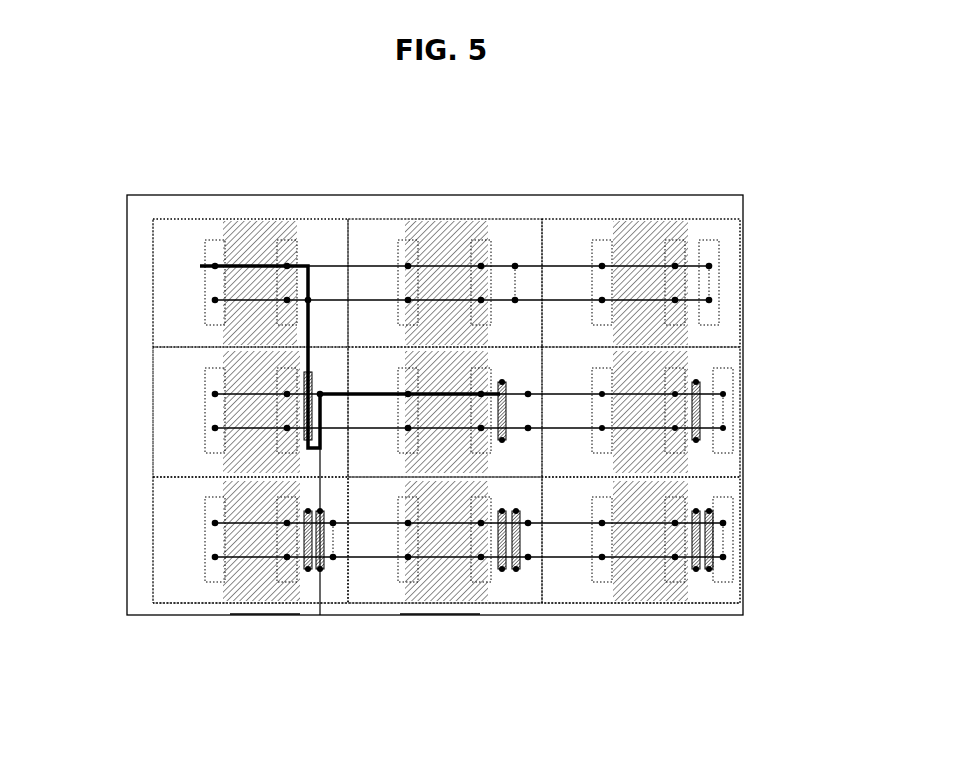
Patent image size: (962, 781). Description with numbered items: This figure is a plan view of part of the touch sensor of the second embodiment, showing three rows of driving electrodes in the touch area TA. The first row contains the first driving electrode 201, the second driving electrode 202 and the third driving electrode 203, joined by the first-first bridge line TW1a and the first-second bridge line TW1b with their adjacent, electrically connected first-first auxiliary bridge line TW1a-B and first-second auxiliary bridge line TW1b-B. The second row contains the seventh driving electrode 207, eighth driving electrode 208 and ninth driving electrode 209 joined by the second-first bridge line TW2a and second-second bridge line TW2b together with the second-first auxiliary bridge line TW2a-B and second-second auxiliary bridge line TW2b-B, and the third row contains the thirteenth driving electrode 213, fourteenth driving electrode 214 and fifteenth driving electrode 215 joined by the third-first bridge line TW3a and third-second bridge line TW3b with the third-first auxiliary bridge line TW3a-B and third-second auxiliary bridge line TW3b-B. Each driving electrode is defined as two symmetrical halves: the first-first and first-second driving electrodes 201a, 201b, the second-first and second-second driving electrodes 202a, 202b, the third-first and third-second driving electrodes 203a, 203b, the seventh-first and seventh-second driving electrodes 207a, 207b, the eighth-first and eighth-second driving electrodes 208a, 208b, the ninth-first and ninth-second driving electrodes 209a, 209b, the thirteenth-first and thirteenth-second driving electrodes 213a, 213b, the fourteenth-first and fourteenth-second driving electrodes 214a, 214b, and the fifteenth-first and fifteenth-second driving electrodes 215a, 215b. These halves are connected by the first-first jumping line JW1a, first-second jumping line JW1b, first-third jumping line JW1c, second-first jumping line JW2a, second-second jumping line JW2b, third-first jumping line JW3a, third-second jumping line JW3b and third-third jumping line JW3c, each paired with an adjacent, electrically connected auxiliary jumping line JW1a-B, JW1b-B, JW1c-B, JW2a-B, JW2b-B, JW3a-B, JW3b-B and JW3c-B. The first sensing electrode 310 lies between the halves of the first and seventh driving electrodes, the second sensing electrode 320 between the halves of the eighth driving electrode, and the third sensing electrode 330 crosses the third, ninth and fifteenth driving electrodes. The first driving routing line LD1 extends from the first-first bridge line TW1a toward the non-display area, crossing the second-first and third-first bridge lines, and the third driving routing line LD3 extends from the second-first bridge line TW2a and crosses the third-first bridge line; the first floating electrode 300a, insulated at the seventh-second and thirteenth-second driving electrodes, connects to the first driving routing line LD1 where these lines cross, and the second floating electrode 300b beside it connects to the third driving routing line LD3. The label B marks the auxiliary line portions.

The first driving electrode 201 is at (293, 180).
The first-first driving electrode 201a is at (160, 216).
The first-second driving electrode 201b is at (279, 216).
The second driving electrode 202 is at (410, 152).
The second-first driving electrode 202a is at (397, 216).
The second-second driving electrode 202b is at (470, 216).
The third driving electrode 203 is at (678, 156).
The third-first driving electrode 203a is at (577, 216).
The third-second driving electrode 203b is at (677, 216).
The seventh driving electrode 207 is at (73, 365).
The seventh-first driving electrode 207a is at (200, 388).
The seventh-second driving electrode 207b is at (205, 420).
The eighth driving electrode 208 is at (792, 373).
The eighth-first driving electrode 208a is at (725, 383).
The eighth-second driving electrode 208b is at (673, 450).
The ninth driving electrode 209 is at (820, 442).
The ninth-first driving electrode 209a is at (700, 465).
The ninth-second driving electrode 209b is at (700, 478).
The thirteenth driving electrode 213 is at (73, 494).
The thirteenth-first driving electrode 213a is at (200, 515).
The thirteenth-second driving electrode 213b is at (205, 550).
The fourteenth driving electrode 214 is at (792, 502).
The fourteenth-first driving electrode 214a is at (730, 510).
The fourteenth-second driving electrode 214b is at (690, 570).
The fifteenth driving electrode 215 is at (818, 568).
The fifteenth-first driving electrode 215a is at (745, 584).
The fifteenth-second driving electrode 215b is at (700, 598).
The first floating electrode 300a is at (153, 477).
The second floating electrode 300b is at (153, 603).
The first sensing electrode 310 is at (252, 616).
The second sensing electrode 320 is at (430, 614).
The third sensing electrode 330 is at (665, 616).
The touch area TA is at (748, 600).
The bit line B is at (343, 353).
The first driving routing line LD1 is at (306, 580).
The third driving routing line LD3 is at (320, 616).
The first-first jumping line JW1a is at (200, 263).
The first-first auxiliary jumping line JW1a-B is at (200, 297).
The first-second jumping line JW1b is at (462, 268).
The first-second auxiliary jumping line JW1b-B is at (520, 300).
The first-third jumping line JW1c is at (690, 302).
The first-third auxiliary jumping line JW1c-B is at (665, 330).
The first-first bridge line TW1a is at (345, 268).
The first-first auxiliary bridge line TW1a-B is at (355, 300).
The first-second bridge line TW1b is at (548, 263).
The first-second auxiliary bridge line TW1b-B is at (548, 298).
The second-first jumping line JW2a is at (205, 394).
The second-first auxiliary jumping line JW2a-B is at (205, 428).
The second-second jumping line JW2b is at (420, 614).
The second-second auxiliary jumping line JW2b-B is at (443, 614).
The second-first bridge line TW2a is at (340, 388).
The second-first auxiliary bridge line TW2a-B is at (363, 424).
The second-second bridge line TW2b is at (565, 392).
The second-second auxiliary bridge line TW2b-B is at (582, 426).
The third-first jumping line JW3a is at (205, 523).
The third-first auxiliary jumping line JW3a-B is at (205, 557).
The third-second jumping line JW3b is at (478, 614).
The third-second auxiliary jumping line JW3b-B is at (507, 614).
The third-third jumping line JW3c is at (627, 616).
The third-third auxiliary jumping line JW3c-B is at (640, 616).
The third-first bridge line TW3a is at (363, 614).
The third-first auxiliary bridge line TW3a-B is at (393, 614).
The third-second bridge line TW3b is at (553, 614).
The third-second auxiliary bridge line TW3b-B is at (588, 616).